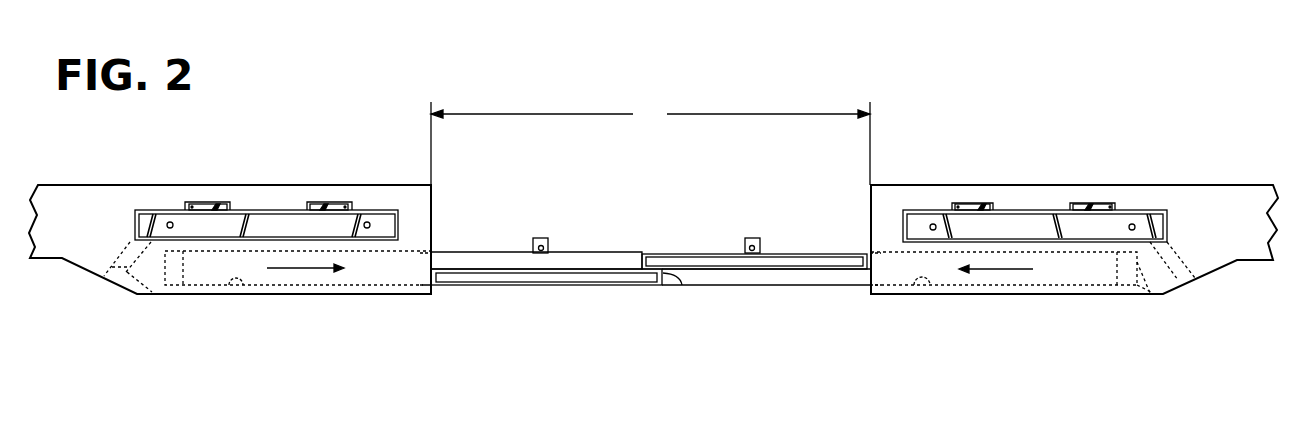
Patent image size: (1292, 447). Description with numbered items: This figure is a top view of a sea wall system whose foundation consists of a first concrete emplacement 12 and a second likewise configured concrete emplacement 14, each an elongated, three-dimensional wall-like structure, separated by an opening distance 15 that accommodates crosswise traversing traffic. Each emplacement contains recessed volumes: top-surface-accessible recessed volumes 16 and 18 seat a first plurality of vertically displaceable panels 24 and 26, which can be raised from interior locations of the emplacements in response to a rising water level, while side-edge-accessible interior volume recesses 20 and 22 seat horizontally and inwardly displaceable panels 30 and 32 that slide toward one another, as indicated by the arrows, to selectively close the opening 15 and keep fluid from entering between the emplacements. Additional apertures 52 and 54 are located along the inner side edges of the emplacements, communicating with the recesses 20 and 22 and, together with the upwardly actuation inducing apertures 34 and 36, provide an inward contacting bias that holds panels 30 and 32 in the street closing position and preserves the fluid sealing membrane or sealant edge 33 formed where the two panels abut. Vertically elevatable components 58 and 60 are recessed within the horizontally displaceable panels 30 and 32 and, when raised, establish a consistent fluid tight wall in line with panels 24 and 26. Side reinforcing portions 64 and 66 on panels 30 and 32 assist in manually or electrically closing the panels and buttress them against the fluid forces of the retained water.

The first concrete emplacement 12 is at (92, 198).
The second concrete emplacement 14 is at (1020, 195).
The opening distance 15 is at (650, 143).
The recessed volume 16 is at (376, 210).
The recessed volume 18 is at (1120, 211).
The interior volume recess 20 is at (248, 287).
The interior volume recess 22 is at (912, 287).
The panel 24 is at (285, 220).
The panel 26 is at (918, 223).
The horizontally displacing panel 30 is at (485, 260).
The horizontally displacing panel 32 is at (765, 277).
The membrane or sealant edge 33 is at (683, 287).
The upwardly actuation inducing aperture 34 is at (112, 278).
The upwardly actuation inducing aperture 36 is at (1185, 275).
The aperture 52 is at (153, 294).
The aperture 54 is at (1152, 298).
The vertically elevatable component 58 is at (527, 277).
The vertically elevatable component 60 is at (790, 260).
The side reinforcing portion 64 is at (540, 238).
The side reinforcing portion 66 is at (753, 238).